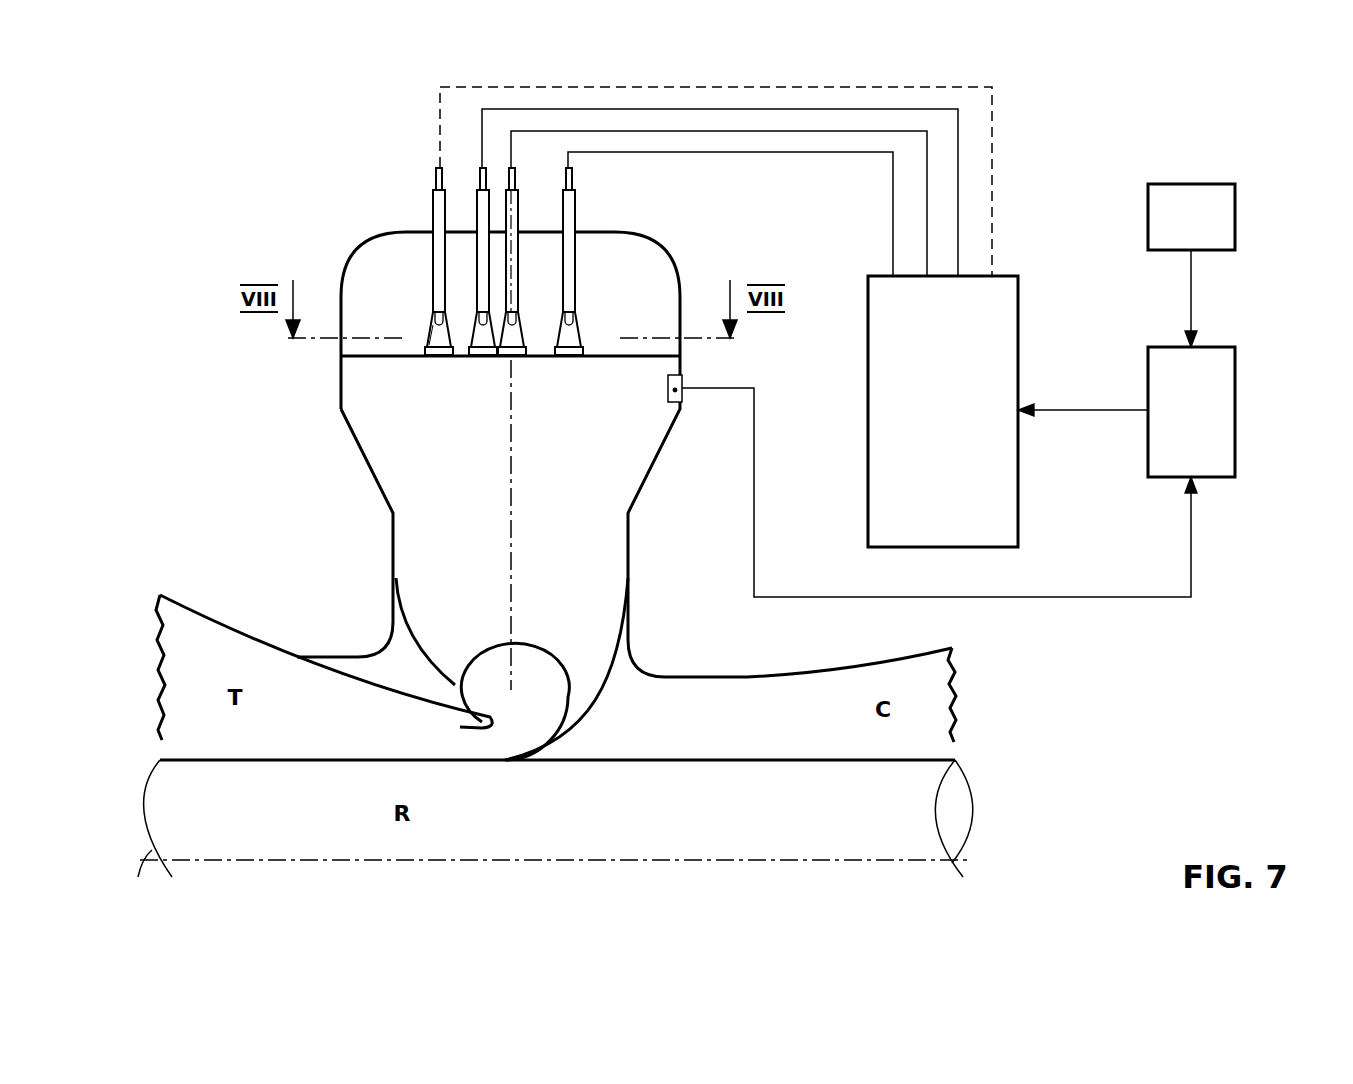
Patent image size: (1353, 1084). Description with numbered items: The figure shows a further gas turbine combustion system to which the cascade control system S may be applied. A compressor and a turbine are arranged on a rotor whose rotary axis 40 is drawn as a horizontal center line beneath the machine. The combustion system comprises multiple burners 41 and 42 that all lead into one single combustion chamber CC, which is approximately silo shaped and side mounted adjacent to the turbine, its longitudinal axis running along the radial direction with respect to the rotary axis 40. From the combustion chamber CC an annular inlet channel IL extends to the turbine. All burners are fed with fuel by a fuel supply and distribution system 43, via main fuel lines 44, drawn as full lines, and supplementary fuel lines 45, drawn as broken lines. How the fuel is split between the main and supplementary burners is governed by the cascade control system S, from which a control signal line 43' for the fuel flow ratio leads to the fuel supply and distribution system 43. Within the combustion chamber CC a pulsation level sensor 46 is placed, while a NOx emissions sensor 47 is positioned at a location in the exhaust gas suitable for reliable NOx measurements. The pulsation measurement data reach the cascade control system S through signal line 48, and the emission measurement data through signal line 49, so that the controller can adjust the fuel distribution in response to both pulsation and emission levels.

The rotary axis 40 is at (665, 858).
The burners 41 is at (483, 247).
The burners 42 is at (427, 322).
The fuel supply and distribution system 43 is at (943, 411).
The control signal line 43' is at (1083, 352).
The main fuel lines 44 is at (772, 109).
The supplementary fuel lines 45 is at (814, 87).
The pulsation level sensor 46 is at (682, 408).
The NOx emissions sensor 47 is at (1174, 232).
The signal line 48 is at (1097, 597).
The signal line 49 is at (1194, 297).
The combustion chamber CC is at (529, 534).
The annular inlet channel IL is at (490, 686).
The cascade control system S is at (1191, 412).